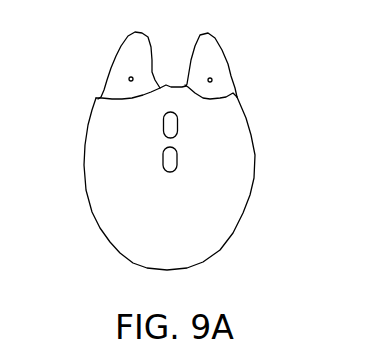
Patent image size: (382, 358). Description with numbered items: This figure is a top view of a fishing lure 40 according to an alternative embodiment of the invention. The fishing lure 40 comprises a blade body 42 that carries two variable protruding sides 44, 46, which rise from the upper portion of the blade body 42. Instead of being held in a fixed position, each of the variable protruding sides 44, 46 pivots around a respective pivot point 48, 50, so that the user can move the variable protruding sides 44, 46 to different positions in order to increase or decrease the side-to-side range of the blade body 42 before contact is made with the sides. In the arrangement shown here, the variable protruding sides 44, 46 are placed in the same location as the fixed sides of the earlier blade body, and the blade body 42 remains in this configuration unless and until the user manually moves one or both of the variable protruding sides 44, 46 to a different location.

The fishing lure 40 is at (185, 147).
The blade body 42 is at (222, 202).
The variable protruding side 44 is at (122, 55).
The variable protruding side 46 is at (210, 43).
The pivot point 48 is at (129, 80).
The pivot point 50 is at (212, 79).